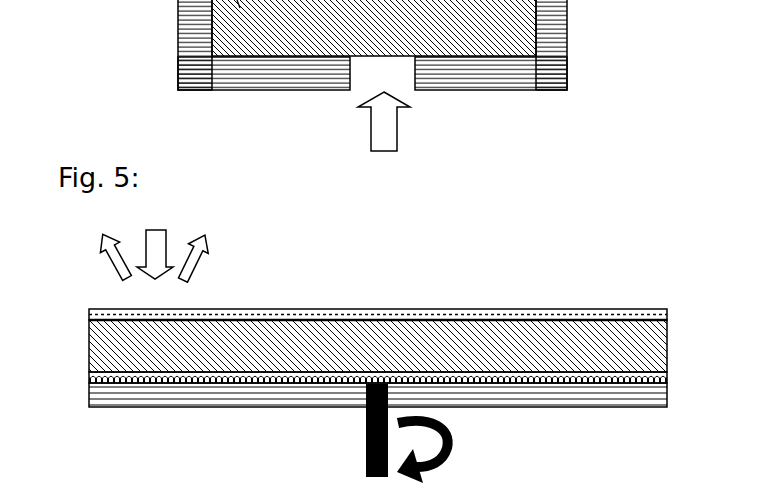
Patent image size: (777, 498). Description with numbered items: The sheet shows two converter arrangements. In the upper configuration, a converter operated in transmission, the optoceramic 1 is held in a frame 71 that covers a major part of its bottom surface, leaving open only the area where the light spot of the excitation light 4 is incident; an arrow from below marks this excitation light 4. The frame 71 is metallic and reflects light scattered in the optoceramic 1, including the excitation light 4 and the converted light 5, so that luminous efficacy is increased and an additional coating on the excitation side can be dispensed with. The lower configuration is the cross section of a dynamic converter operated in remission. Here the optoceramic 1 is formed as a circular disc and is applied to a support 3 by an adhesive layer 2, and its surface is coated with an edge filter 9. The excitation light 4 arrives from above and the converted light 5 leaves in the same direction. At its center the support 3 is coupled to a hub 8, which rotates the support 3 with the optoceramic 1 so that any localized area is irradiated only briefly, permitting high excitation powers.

In FIG. 4, the frame 71 is at (568, 42).
In FIG. 4, the excitation light 4 is at (400, 128).
In FIG. 5, the excitation light 4 is at (156, 228).
In FIG. 5, the converted light 5 is at (190, 270).
In FIG. 5, the edge filter 9 is at (89, 309).
In FIG. 5, the optoceramic 1 is at (668, 346).
In FIG. 5, the adhesive layer 2 is at (88, 377).
In FIG. 5, the support 3 is at (668, 394).
In FIG. 5, the hub 8 is at (365, 458).